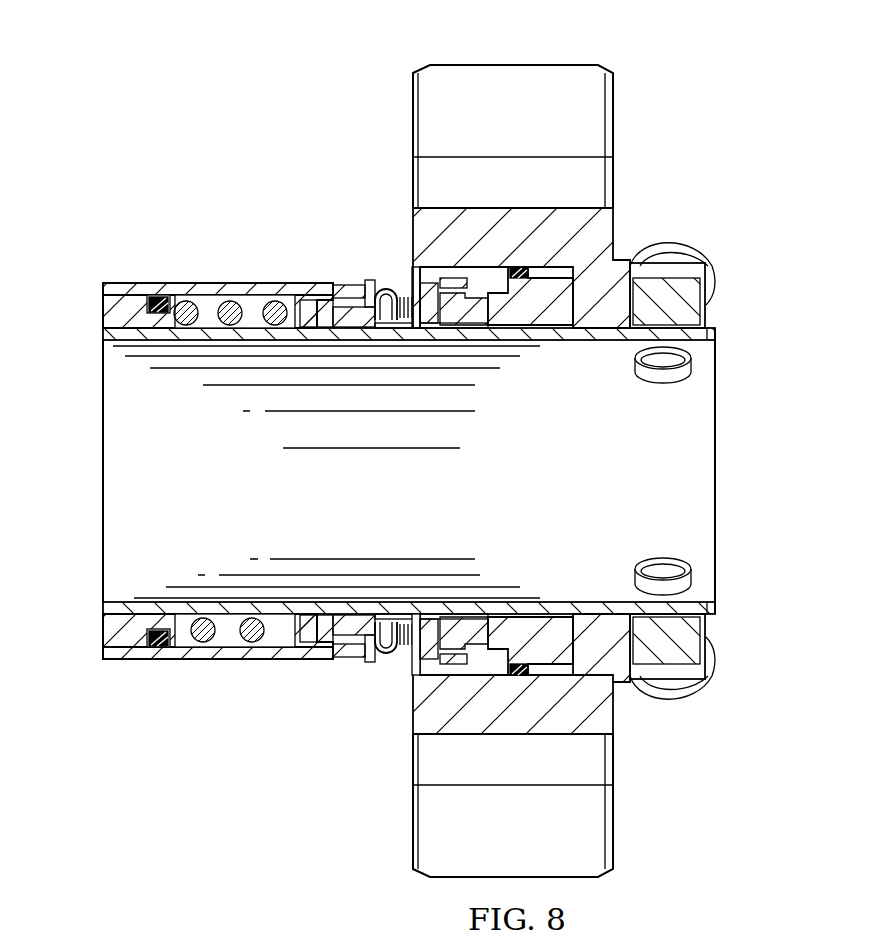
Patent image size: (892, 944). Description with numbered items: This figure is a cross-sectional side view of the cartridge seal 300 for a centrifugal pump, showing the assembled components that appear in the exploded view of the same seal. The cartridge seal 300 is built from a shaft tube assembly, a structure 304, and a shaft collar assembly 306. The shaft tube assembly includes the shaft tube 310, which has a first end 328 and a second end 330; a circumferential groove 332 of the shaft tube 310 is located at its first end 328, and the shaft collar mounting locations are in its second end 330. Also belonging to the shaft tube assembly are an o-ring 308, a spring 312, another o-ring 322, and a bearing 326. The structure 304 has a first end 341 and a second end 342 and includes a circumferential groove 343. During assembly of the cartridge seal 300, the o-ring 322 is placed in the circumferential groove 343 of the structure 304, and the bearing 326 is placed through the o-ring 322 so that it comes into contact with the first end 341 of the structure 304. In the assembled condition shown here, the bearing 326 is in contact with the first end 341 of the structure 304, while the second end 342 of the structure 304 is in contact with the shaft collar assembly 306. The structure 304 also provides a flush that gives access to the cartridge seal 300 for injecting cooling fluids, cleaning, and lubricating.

The cartridge seal 300 is at (213, 121).
The structure 304 is at (517, 65).
The shaft collar assembly 306 is at (645, 646).
The o-ring 308 is at (163, 650).
The shaft tube 310 is at (103, 309).
The spring 312 is at (252, 646).
The o-ring 322 is at (528, 680).
The bearing 326 is at (553, 312).
The first end 328 is at (94, 470).
The second end 330 is at (732, 470).
The circumferential groove 332 is at (122, 632).
The first end 341 is at (594, 286).
The second end 342 is at (612, 640).
The circumferential groove 343 is at (549, 676).